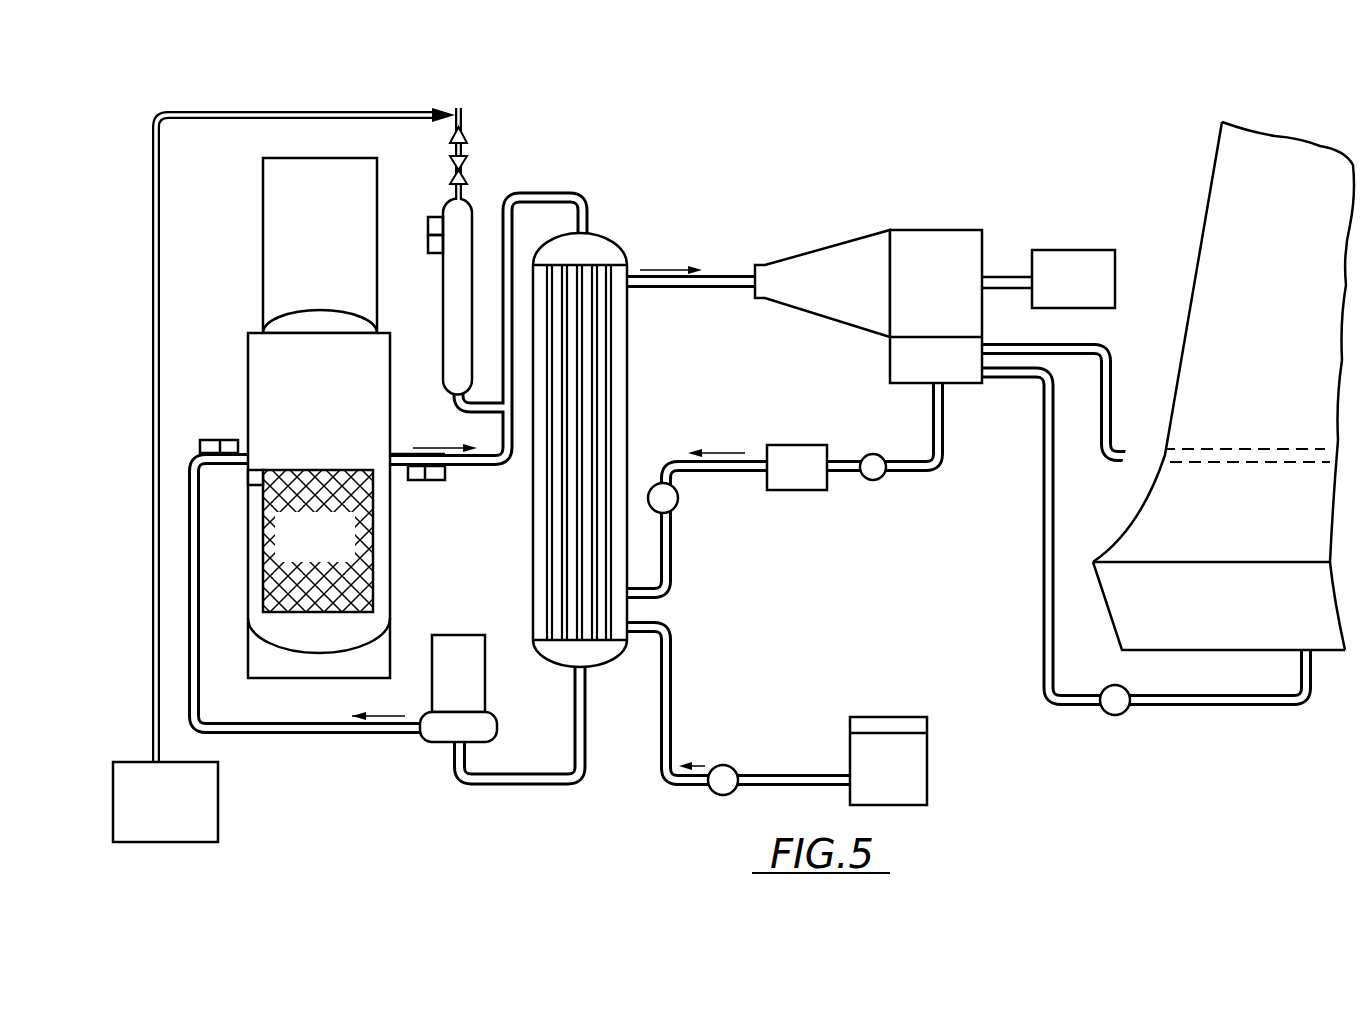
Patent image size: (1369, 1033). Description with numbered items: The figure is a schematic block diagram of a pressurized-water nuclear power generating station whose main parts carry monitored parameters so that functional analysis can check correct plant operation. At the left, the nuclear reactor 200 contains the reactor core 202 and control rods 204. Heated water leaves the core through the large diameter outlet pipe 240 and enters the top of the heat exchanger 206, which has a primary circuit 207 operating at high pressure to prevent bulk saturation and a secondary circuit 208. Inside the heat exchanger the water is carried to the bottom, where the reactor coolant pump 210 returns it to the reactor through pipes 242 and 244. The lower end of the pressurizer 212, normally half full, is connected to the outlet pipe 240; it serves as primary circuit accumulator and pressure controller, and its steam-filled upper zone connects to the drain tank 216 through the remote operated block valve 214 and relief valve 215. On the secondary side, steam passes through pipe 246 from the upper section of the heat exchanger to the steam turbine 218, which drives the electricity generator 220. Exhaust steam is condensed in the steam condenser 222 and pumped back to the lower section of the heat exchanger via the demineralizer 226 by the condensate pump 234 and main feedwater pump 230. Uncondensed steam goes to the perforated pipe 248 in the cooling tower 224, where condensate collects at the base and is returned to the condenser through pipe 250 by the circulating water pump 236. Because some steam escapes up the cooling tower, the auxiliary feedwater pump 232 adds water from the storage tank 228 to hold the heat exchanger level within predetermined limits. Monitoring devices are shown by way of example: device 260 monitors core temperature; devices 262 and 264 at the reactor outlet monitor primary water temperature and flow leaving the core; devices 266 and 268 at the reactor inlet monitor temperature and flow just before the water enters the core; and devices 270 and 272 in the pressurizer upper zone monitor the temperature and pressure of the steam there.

The nuclear reactor 200 is at (373, 398).
The reactor core 202 is at (348, 535).
The control rods 204 is at (353, 248).
The heat exchanger 206 is at (770, 418).
The primary circuit 207 is at (535, 452).
The secondary circuit 208 is at (630, 567).
The reactor coolant pump 210 is at (486, 672).
The pressurizer 212 is at (472, 212).
The remote operated block valve 214 is at (452, 166).
The relief valve 215 is at (462, 118).
The drain tank 216 is at (188, 817).
The steam turbine 218 is at (900, 228).
The electricity generator 220 is at (1100, 288).
The steam condenser 222 is at (967, 373).
The cooling tower 224 is at (1310, 341).
The demineralizer 226 is at (820, 466).
The storage tank 228 is at (917, 770).
The main feedwater pump 230 is at (672, 507).
The auxiliary feedwater pump 232 is at (729, 771).
The condensate pump 234 is at (866, 479).
The circulating water pump 236 is at (1110, 709).
The outlet pipe 240 is at (486, 466).
The pipe 242 is at (568, 786).
The pipe 244 is at (237, 732).
The pipe 246 is at (727, 303).
The perforated pipe 248 is at (1226, 452).
The pipe 250 is at (1043, 600).
The core temperature monitoring device 260 is at (258, 470).
The outlet temperature monitoring device 262 is at (413, 468).
The outlet flow monitoring device 264 is at (437, 481).
The inlet temperature monitoring device 266 is at (200, 446).
The inlet flow monitoring device 268 is at (229, 440).
The pressurizer temperature monitoring device 270 is at (428, 250).
The pressurizer pressure monitoring device 272 is at (428, 228).